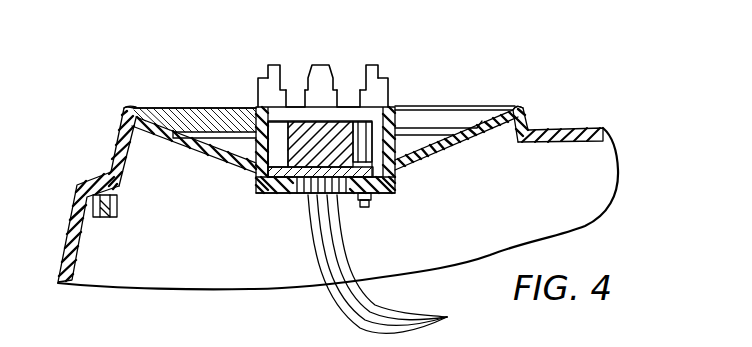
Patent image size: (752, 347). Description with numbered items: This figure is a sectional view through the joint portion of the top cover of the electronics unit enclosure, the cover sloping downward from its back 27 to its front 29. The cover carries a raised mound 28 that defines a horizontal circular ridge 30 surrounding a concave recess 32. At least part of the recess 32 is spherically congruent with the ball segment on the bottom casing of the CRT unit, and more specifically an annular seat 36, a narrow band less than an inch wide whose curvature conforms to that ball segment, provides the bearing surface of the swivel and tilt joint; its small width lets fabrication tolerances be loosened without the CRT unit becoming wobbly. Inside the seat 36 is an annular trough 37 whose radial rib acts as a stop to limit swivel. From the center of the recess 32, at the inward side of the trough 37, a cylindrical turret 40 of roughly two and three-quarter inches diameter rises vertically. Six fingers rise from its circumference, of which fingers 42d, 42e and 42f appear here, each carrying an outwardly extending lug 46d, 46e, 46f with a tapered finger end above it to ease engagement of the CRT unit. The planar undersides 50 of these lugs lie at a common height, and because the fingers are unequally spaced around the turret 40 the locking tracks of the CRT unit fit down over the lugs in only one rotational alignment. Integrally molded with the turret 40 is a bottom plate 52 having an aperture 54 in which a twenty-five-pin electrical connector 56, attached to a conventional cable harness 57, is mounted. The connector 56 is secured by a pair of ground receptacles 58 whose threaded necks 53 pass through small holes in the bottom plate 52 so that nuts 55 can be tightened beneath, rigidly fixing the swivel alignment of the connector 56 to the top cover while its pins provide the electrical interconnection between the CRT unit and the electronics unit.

The back 27 is at (600, 127).
The raised mound 28 is at (115, 148).
The front 29 is at (83, 190).
The horizontal circular ridge 30 is at (133, 110).
The concave recess 32 is at (198, 95).
The annular seat 36 is at (157, 108).
The annular trough 37 is at (433, 148).
The cylindrical turret 40 is at (256, 183).
The finger 42d is at (276, 72).
The finger 42e is at (318, 75).
The finger 42f is at (364, 80).
The lug 46d is at (262, 82).
The lug 46e is at (303, 80).
The lug 46f is at (388, 85).
The planar undersides 50 is at (258, 88).
The bottom plate 52 is at (268, 195).
The threaded necks 53 is at (370, 208).
The aperture 54 is at (300, 194).
The nuts 55 is at (373, 198).
The electrical connector 56 is at (293, 145).
The cable harness 57 is at (365, 312).
The ground receptacles 58 is at (372, 160).